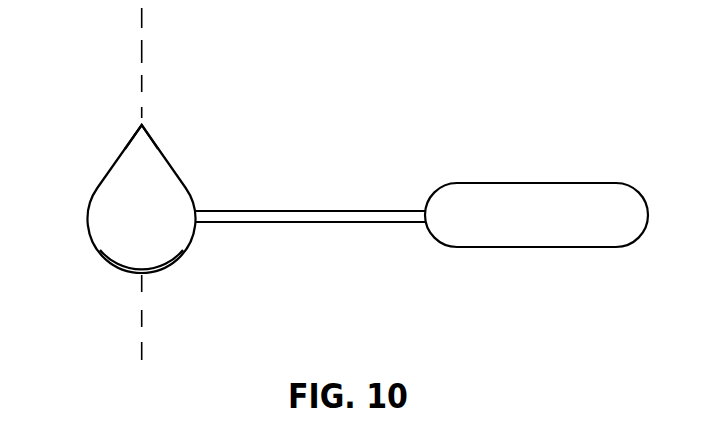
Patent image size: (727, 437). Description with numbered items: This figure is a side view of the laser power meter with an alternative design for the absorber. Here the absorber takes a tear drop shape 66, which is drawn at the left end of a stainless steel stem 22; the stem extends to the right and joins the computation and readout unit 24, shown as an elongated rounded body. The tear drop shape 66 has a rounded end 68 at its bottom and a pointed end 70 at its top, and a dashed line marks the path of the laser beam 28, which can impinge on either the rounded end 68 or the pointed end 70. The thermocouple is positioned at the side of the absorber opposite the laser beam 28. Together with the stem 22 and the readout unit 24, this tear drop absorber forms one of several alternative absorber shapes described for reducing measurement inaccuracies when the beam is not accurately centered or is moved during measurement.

The laser beam 28 is at (142, 50).
The pointed end 70 is at (142, 125).
The tear drop shape 66 is at (181, 179).
The rounded end 68 is at (177, 269).
The stainless steel stem 22 is at (327, 210).
The computation and readout unit 24 is at (552, 183).